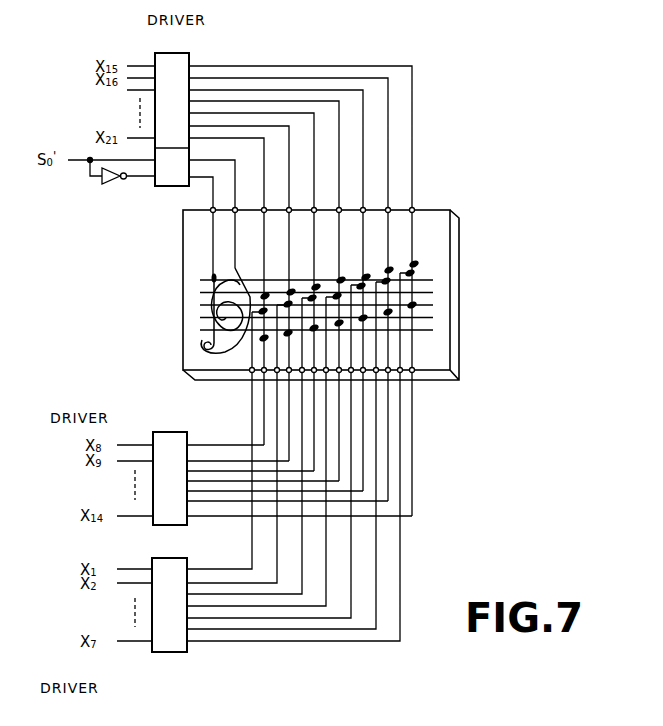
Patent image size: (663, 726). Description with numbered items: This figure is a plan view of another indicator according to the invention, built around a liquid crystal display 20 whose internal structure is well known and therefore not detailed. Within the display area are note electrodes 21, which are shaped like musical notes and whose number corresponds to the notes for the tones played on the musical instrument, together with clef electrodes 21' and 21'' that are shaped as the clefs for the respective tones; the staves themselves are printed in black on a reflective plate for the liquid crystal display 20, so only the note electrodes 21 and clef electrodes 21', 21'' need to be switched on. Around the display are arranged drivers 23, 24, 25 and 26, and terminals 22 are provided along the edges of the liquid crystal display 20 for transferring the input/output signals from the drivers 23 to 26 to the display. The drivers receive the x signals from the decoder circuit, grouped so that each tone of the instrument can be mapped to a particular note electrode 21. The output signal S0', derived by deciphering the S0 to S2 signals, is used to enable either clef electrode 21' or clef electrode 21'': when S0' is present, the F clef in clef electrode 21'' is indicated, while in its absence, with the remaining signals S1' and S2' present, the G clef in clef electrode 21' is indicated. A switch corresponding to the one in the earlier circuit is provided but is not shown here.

The liquid crystal display 20 is at (427, 223).
The note electrodes 21 is at (385, 287).
The clef electrode 21' is at (168, 271).
The clef electrode 21'' is at (172, 310).
The terminals 22 is at (418, 368).
The driver 23 is at (172, 70).
The driver 24 is at (152, 190).
The driver 25 is at (171, 449).
The driver 26 is at (167, 655).